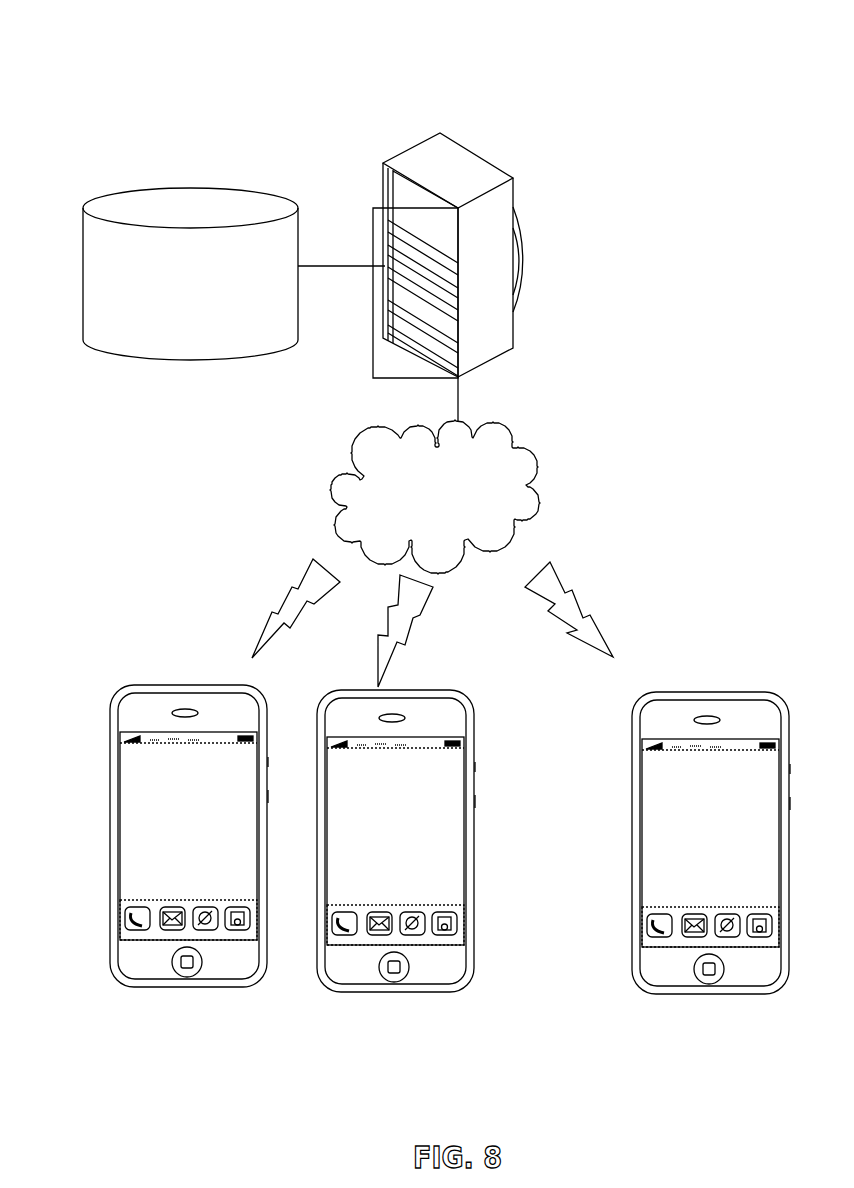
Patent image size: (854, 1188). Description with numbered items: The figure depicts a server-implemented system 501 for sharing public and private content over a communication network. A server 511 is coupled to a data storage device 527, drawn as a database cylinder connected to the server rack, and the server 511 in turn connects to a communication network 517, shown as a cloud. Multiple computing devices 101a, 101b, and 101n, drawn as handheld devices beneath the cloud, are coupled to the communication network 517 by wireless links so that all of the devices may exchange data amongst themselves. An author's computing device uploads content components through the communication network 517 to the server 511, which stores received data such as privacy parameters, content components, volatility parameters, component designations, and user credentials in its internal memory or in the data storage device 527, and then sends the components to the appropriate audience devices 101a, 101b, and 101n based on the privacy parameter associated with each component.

The system 501 is at (639, 62).
The data storage device 527 is at (173, 187).
The server 511 is at (475, 155).
The communication network 517 is at (540, 490).
The computing device 101a is at (152, 987).
The computing device 101b is at (358, 992).
The computing device 101n is at (635, 987).